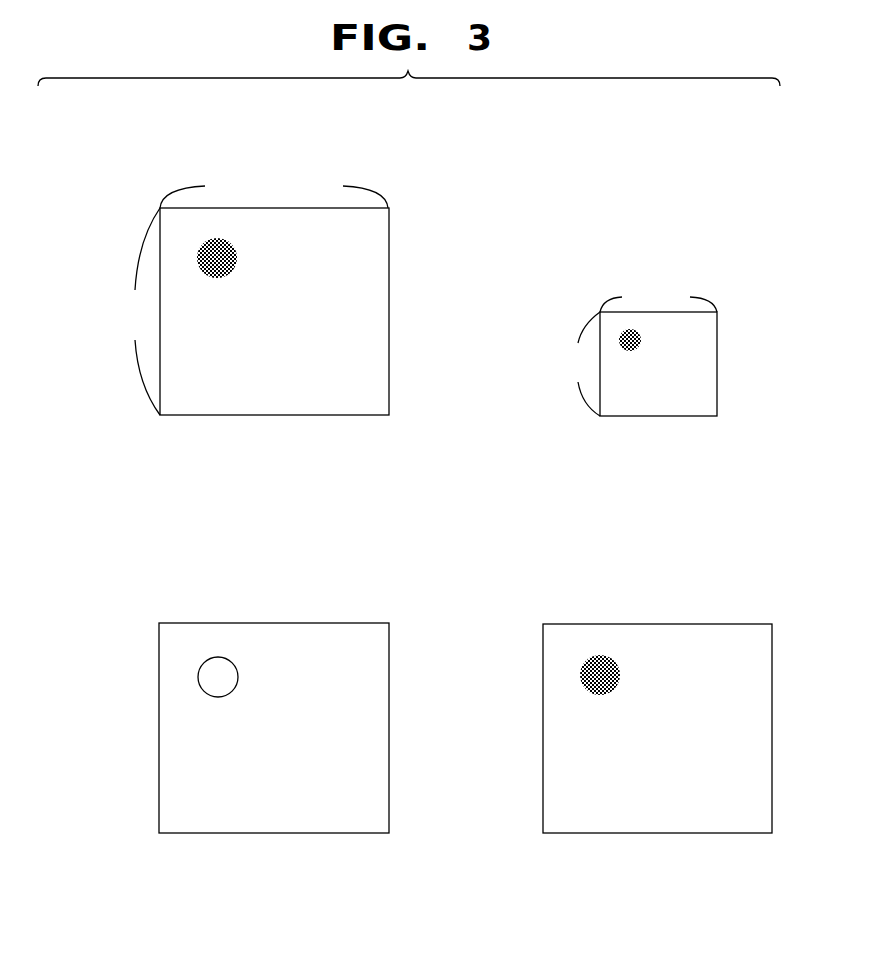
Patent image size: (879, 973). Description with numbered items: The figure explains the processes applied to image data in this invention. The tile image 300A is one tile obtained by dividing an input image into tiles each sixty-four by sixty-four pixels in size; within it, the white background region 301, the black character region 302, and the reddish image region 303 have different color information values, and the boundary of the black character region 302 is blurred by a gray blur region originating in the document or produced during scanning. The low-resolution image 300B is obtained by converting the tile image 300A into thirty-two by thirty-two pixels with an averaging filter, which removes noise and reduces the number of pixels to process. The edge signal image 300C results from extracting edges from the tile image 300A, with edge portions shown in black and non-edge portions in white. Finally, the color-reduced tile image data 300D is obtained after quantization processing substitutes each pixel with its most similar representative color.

The tile image 300A is at (372, 158).
The low-resolution image 300B is at (689, 263).
The edge signal image 300C is at (332, 608).
The color-reduced tile image data 300D is at (691, 609).
The white background region 301 is at (372, 234).
The black character region 302 is at (300, 358).
The reddish image region 303 is at (236, 256).